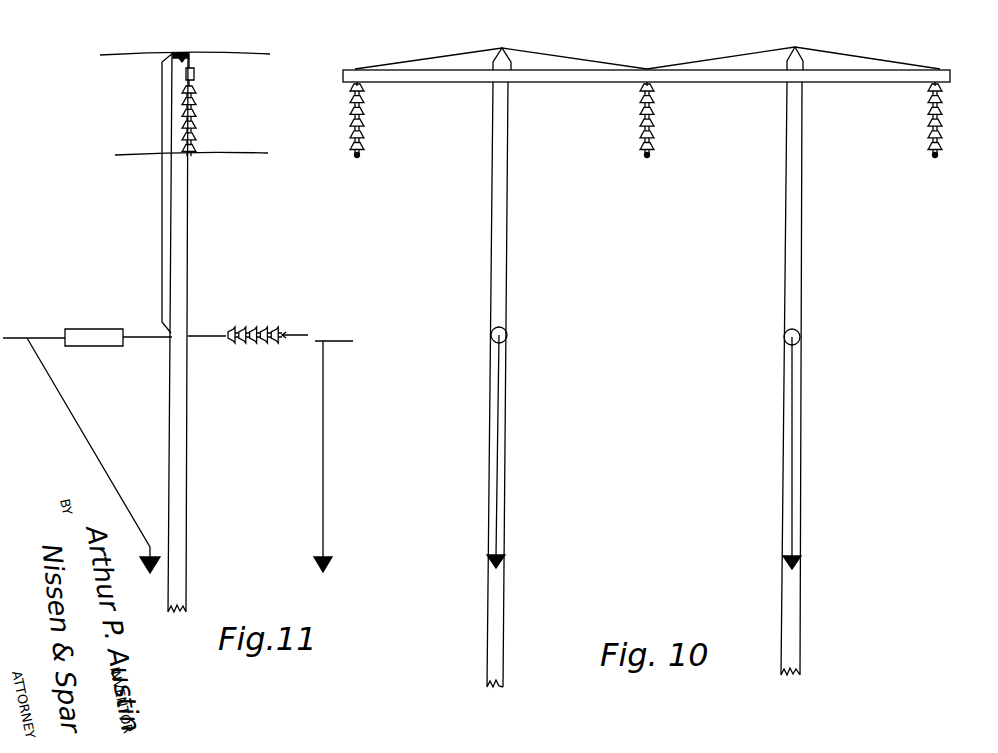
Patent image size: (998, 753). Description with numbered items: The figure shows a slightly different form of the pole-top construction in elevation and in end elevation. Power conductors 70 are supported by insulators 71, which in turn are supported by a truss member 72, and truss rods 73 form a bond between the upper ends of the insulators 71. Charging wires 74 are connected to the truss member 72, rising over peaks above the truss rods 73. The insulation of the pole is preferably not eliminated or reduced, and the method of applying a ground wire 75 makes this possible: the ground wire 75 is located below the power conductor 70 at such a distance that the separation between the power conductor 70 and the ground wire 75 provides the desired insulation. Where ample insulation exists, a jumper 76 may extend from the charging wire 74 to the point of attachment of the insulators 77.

In FIG. 11, the power conductor 70 is at (217, 157).
In FIG. 10, the power conductor 70 is at (358, 156).
In FIG. 11, the insulator 71 is at (194, 124).
In FIG. 10, the insulator 71 is at (366, 120).
In FIG. 10, the truss member 72 is at (556, 76).
In FIG. 10, the truss rod 73 is at (436, 58).
In FIG. 11, the charging wire 74 is at (200, 53).
In FIG. 10, the charging wire 74 is at (504, 48).
In FIG. 11, the ground wire 75 is at (323, 341).
In FIG. 11, the jumper 76 is at (162, 222).
In FIG. 11, the insulators 77 is at (103, 308).